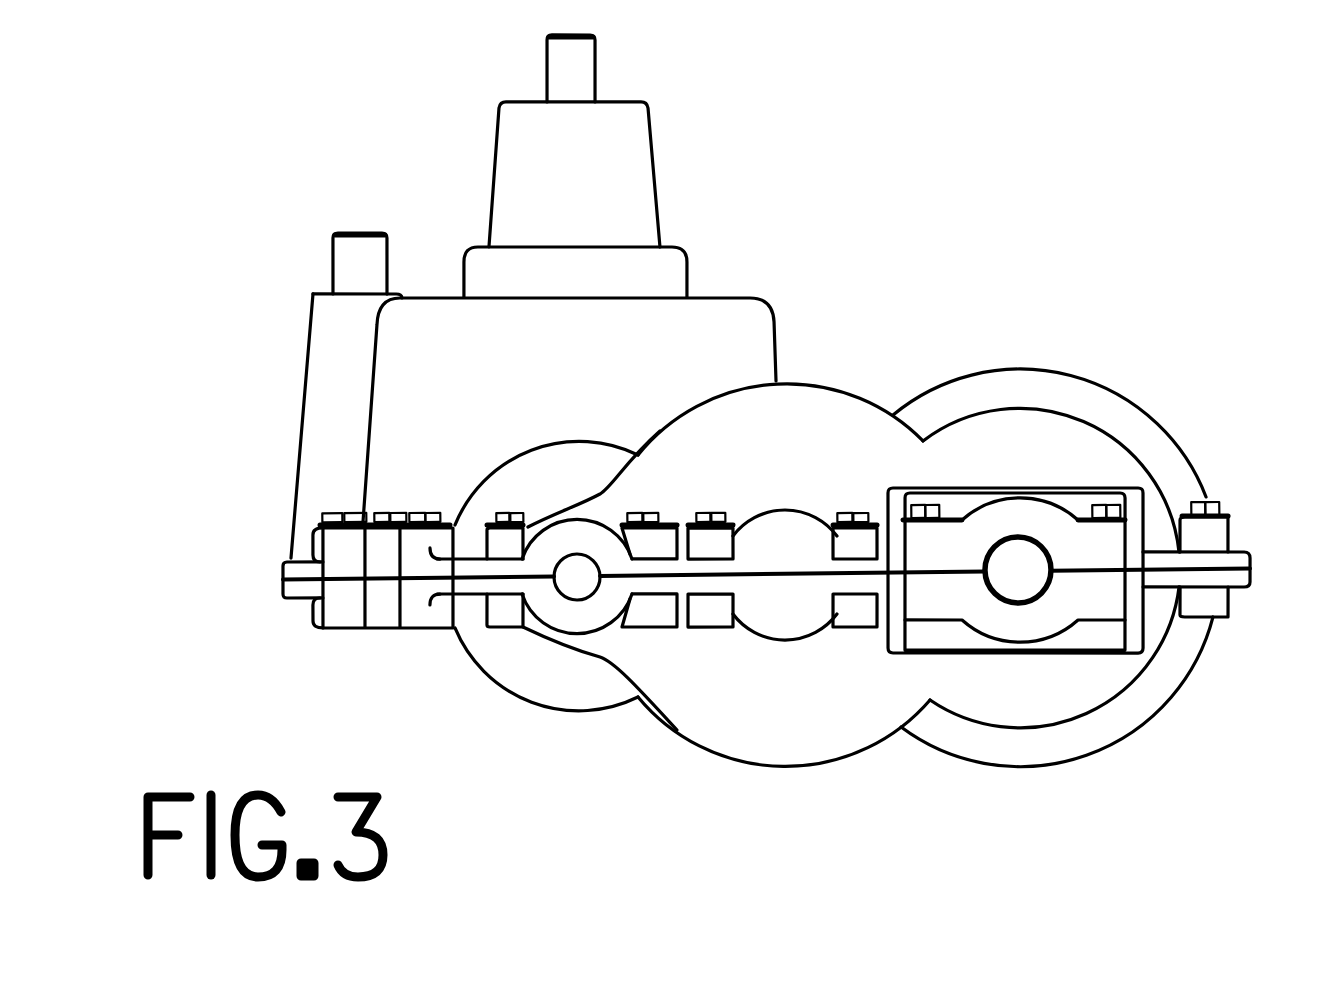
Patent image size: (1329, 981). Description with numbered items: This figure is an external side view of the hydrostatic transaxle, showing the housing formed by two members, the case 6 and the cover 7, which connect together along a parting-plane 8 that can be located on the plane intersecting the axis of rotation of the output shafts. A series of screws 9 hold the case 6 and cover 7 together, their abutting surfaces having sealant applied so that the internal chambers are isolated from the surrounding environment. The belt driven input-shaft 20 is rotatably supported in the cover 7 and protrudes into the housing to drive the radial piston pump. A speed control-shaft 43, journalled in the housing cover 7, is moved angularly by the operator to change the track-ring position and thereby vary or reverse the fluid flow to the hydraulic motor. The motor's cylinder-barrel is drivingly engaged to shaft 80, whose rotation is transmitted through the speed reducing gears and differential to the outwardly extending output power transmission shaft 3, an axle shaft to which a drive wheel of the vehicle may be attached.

The input-shaft 20 is at (585, 60).
The speed control-shaft 43 is at (362, 257).
The cover 7 is at (411, 366).
The screws 9 is at (721, 509).
The shaft 80 is at (578, 575).
The output power transmission shaft 3 is at (1027, 590).
The case 6 is at (1040, 717).
The parting-plane 8 is at (1200, 575).